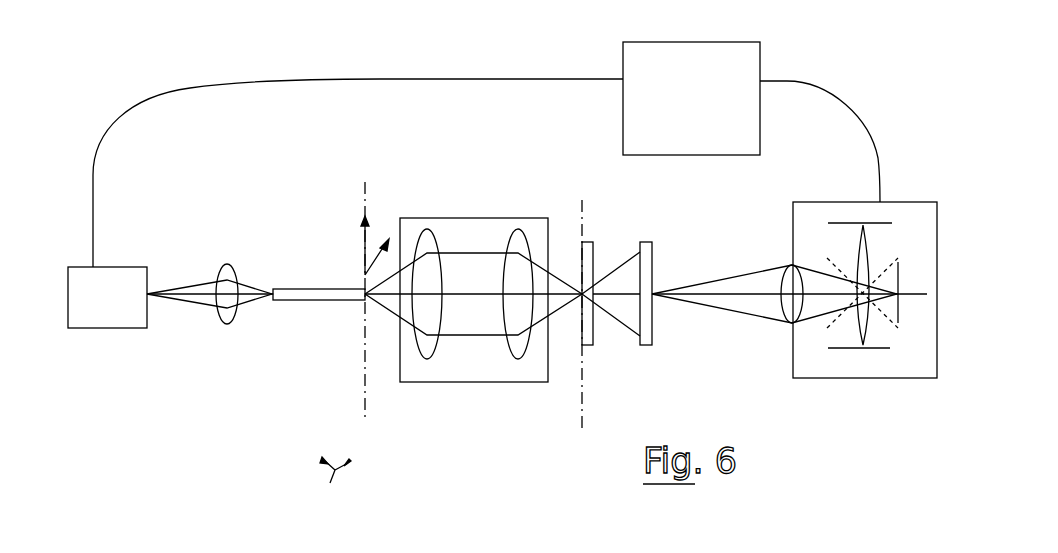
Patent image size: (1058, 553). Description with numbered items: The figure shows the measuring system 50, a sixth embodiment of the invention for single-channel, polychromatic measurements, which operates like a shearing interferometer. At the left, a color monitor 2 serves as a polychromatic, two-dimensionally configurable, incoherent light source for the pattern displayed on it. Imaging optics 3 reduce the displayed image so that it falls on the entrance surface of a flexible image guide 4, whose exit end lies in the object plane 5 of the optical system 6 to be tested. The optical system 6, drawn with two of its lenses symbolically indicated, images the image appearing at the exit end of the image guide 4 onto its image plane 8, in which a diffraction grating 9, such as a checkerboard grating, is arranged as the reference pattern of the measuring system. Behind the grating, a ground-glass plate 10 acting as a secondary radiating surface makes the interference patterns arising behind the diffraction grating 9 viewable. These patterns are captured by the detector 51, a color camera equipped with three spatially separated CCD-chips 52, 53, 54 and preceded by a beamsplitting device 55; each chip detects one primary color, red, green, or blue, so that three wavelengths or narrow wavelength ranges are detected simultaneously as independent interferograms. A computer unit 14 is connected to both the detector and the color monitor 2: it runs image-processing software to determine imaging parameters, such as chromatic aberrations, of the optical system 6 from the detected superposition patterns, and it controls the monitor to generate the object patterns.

The color monitor 2 is at (103, 328).
The imaging optics 3 is at (227, 324).
The flexible image guide 4 is at (315, 300).
The object plane 5 is at (363, 170).
The optical system to be tested 6 is at (473, 382).
The image plane 8 is at (580, 182).
The diffraction grating 9 is at (595, 345).
The ground-glass plate 10 is at (653, 345).
The computer unit 14 is at (747, 52).
The measuring system 50 is at (324, 486).
The detector 51 is at (872, 388).
The CCD-chip 52 is at (887, 223).
The CCD-chip 53 is at (907, 307).
The CCD-chip 54 is at (850, 348).
The beamsplitting device 55 is at (837, 260).